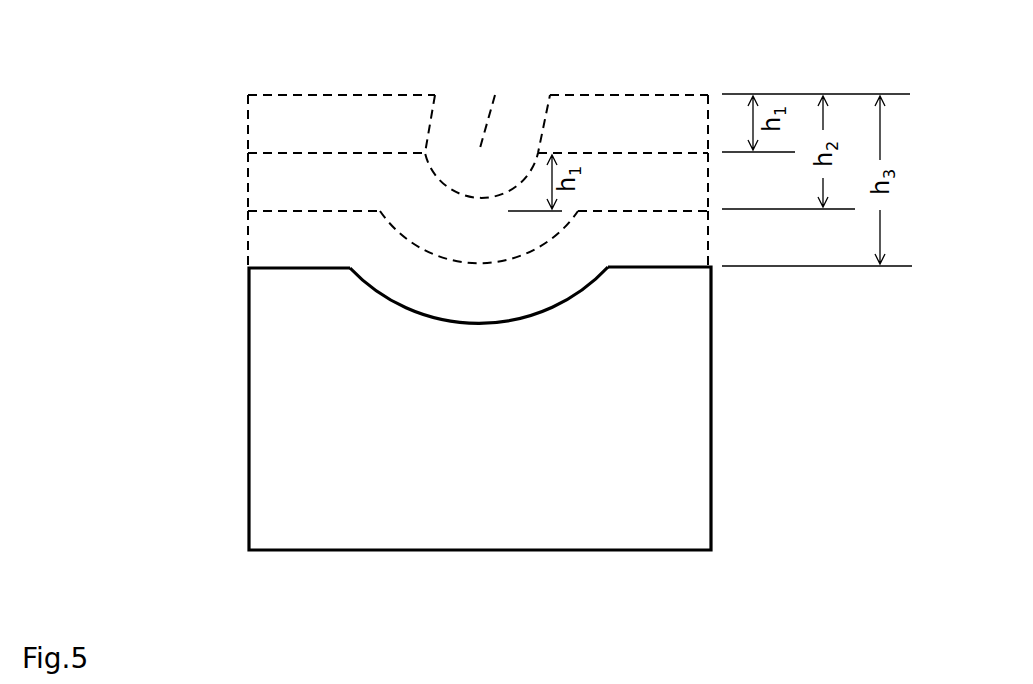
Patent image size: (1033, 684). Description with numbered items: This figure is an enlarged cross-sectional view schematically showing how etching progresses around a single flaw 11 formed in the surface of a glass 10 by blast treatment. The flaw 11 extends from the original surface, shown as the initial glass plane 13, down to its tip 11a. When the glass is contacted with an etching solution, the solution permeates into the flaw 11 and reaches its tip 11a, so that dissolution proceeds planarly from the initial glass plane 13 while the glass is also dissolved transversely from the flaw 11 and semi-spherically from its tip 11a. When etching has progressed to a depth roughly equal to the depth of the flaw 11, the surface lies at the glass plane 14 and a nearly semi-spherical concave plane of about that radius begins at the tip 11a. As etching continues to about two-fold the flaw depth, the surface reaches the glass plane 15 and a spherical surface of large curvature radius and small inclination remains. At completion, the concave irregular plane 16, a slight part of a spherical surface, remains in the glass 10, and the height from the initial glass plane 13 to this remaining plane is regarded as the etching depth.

The glass 10 is at (393, 408).
The flaw 11 is at (488, 125).
The tip of flaw 11a is at (473, 148).
The initial glass plane 13 is at (225, 101).
The glass plane 14 is at (225, 159).
The glass plane 15 is at (225, 218).
The irregular plane 16 is at (383, 300).